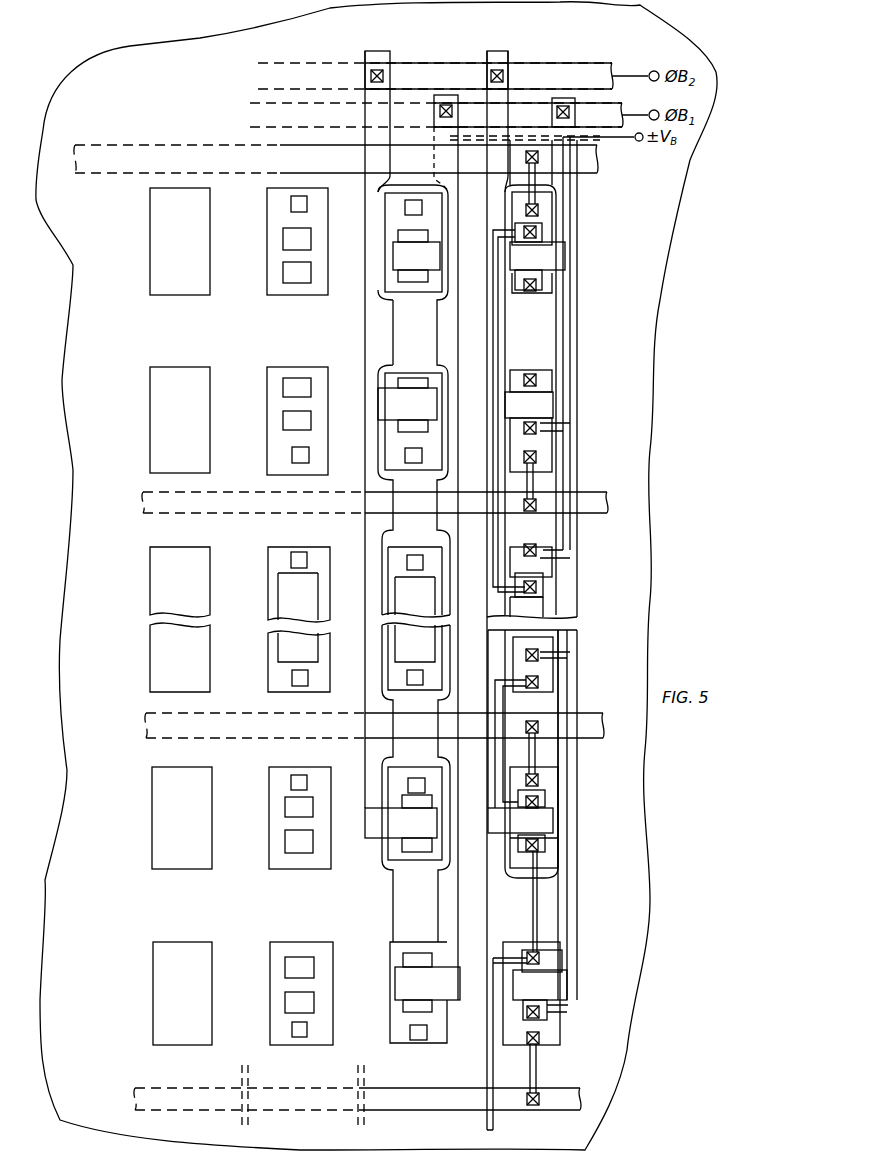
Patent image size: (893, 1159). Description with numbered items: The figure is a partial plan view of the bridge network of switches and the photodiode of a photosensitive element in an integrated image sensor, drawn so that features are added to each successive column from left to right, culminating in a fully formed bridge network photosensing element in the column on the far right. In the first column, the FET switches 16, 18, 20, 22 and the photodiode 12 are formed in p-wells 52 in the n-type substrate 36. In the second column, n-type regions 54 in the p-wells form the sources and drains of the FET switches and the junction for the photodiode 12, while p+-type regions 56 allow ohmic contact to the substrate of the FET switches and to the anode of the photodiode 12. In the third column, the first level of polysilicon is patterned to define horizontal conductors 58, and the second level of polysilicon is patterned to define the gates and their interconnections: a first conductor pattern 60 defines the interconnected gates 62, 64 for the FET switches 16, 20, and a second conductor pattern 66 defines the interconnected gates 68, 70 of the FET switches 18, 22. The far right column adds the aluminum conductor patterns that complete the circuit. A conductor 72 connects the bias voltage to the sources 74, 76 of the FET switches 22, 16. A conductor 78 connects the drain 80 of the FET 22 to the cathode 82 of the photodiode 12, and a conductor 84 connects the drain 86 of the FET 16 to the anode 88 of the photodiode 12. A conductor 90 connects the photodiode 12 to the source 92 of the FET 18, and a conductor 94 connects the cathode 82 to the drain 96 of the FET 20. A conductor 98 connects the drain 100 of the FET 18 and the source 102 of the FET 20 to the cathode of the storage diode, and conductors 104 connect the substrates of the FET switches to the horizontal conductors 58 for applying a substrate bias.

The n-type substrate 36 is at (119, 50).
The p-wells 52 is at (150, 250).
The n-type regions 54 is at (283, 270).
The p+-type regions 56 is at (291, 204).
The horizontal conductors 58 is at (474, 185).
The first conductor pattern 60 is at (365, 324).
The gate 62 is at (410, 421).
The gate 64 is at (403, 813).
The second conductor pattern 66 is at (448, 336).
The gate 68 is at (413, 242).
The gate 70 is at (425, 992).
The conductor 72 is at (598, 138).
The source 74 is at (545, 290).
The source 76 is at (540, 378).
The conductor 78 is at (493, 418).
The drain 80 is at (542, 233).
The cathode 82 is at (540, 595).
The conductor 84 is at (572, 512).
The drain 86 is at (545, 434).
The anode 88 is at (545, 550).
The conductor 90 is at (572, 837).
The source 92 is at (548, 1015).
The conductor 94 is at (495, 755).
The drain 96 is at (545, 800).
The conductor 98 is at (488, 1072).
The drain 100 is at (545, 960).
The source 102 is at (545, 850).
The conductors 104 is at (535, 186).
The photodiode 12 is at (603, 565).
The FET switch 16 is at (590, 408).
The FET switch 18 is at (592, 987).
The FET switch 20 is at (590, 818).
The FET switch 22 is at (600, 253).